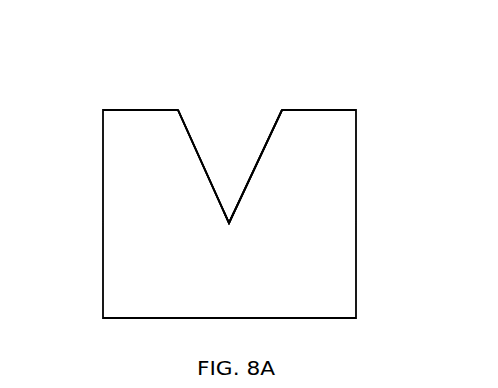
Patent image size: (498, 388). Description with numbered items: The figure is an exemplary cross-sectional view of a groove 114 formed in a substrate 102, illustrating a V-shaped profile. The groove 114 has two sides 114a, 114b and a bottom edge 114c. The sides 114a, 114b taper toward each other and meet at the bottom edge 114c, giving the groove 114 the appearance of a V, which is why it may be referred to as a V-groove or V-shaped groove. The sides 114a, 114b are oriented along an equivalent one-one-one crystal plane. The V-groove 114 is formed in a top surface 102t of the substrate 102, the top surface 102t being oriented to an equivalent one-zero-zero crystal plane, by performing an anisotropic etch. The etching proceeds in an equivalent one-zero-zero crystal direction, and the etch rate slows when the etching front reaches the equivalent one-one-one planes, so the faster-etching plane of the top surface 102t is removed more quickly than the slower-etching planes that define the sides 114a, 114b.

The substrate 102 is at (152, 250).
The top surface of substrate 102t is at (322, 110).
The groove 114 is at (225, 140).
The side of groove 114a is at (255, 170).
The side of groove 114b is at (205, 173).
The bottom edge of groove 114c is at (228, 227).